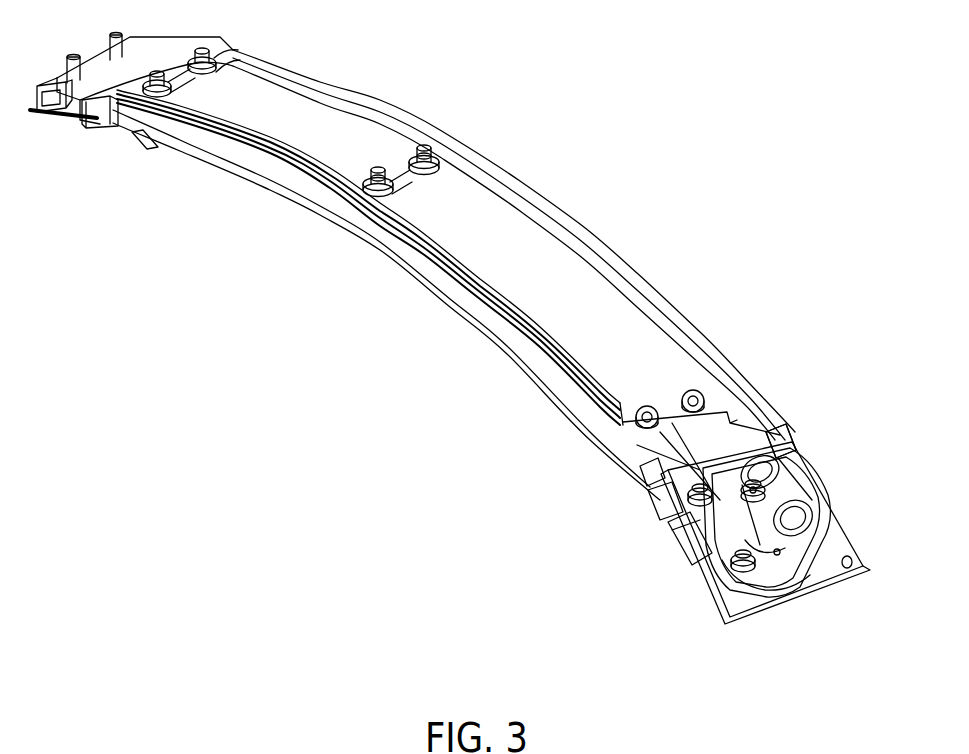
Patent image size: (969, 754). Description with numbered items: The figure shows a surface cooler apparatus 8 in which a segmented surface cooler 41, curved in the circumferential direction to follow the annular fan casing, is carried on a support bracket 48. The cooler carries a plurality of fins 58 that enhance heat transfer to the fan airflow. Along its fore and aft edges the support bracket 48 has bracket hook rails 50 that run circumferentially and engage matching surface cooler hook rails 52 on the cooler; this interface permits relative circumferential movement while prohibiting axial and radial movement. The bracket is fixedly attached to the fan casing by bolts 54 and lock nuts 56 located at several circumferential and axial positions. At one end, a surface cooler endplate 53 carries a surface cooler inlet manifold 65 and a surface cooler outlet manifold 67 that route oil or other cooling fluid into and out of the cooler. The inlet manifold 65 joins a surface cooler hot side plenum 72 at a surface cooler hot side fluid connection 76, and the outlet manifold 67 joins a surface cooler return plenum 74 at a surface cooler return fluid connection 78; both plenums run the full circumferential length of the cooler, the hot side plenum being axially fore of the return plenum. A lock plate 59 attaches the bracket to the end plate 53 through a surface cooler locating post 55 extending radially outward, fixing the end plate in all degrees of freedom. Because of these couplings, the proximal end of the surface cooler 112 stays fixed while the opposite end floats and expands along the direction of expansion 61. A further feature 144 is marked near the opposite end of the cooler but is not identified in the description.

The surface cooler apparatus 8 is at (196, 318).
The segmented surface cooler 41 is at (735, 438).
The support bracket 48 is at (428, 252).
The bracket hook rails 50 is at (640, 313).
The surface cooler hook rails 52 is at (660, 458).
The surface cooler endplate 53 is at (684, 585).
The bolts 54 is at (398, 190).
The surface cooler locating post 55 is at (680, 543).
The lock nuts 56 is at (573, 203).
The fins 58 is at (157, 147).
The lock plate 59 is at (652, 470).
The direction of expansion 61 is at (292, 55).
The surface cooler inlet manifold 65 is at (793, 523).
The surface cooler outlet manifold 67 is at (707, 587).
The surface cooler hot side plenum 72 is at (306, 190).
The surface cooler return plenum 74 is at (180, 22).
The surface cooler hot side fluid connection 76 is at (645, 502).
The surface cooler return fluid connection 78 is at (782, 433).
The proximal end of the surface cooler 112 is at (722, 624).
The end block 144 is at (85, 122).